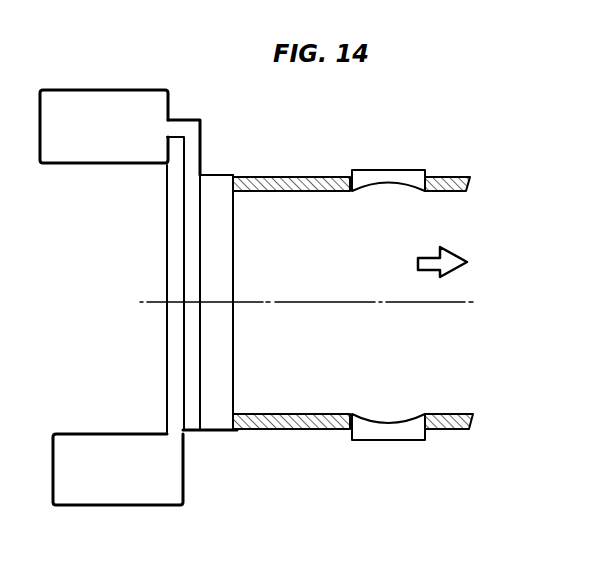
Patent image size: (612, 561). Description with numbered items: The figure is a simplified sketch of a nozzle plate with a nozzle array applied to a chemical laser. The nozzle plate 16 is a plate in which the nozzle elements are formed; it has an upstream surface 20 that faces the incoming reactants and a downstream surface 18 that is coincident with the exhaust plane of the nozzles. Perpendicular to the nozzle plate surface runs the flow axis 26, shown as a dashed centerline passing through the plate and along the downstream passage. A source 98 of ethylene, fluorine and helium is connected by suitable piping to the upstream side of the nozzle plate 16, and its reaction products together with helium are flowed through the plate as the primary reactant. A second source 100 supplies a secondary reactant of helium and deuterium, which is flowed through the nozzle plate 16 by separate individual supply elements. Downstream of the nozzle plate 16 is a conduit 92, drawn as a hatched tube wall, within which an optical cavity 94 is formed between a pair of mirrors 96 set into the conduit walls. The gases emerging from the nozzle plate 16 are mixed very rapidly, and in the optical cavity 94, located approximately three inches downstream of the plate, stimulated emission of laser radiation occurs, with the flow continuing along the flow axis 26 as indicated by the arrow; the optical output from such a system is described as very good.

The source 98 is at (124, 90).
The source 100 is at (94, 434).
The nozzle plate 16 is at (226, 259).
The downstream surface 18 is at (234, 231).
The upstream surface 20 is at (200, 276).
The conduit 92 is at (283, 177).
The mirrors 96 is at (392, 170).
The optical cavity 94 is at (388, 247).
The flow axis 26 is at (420, 305).